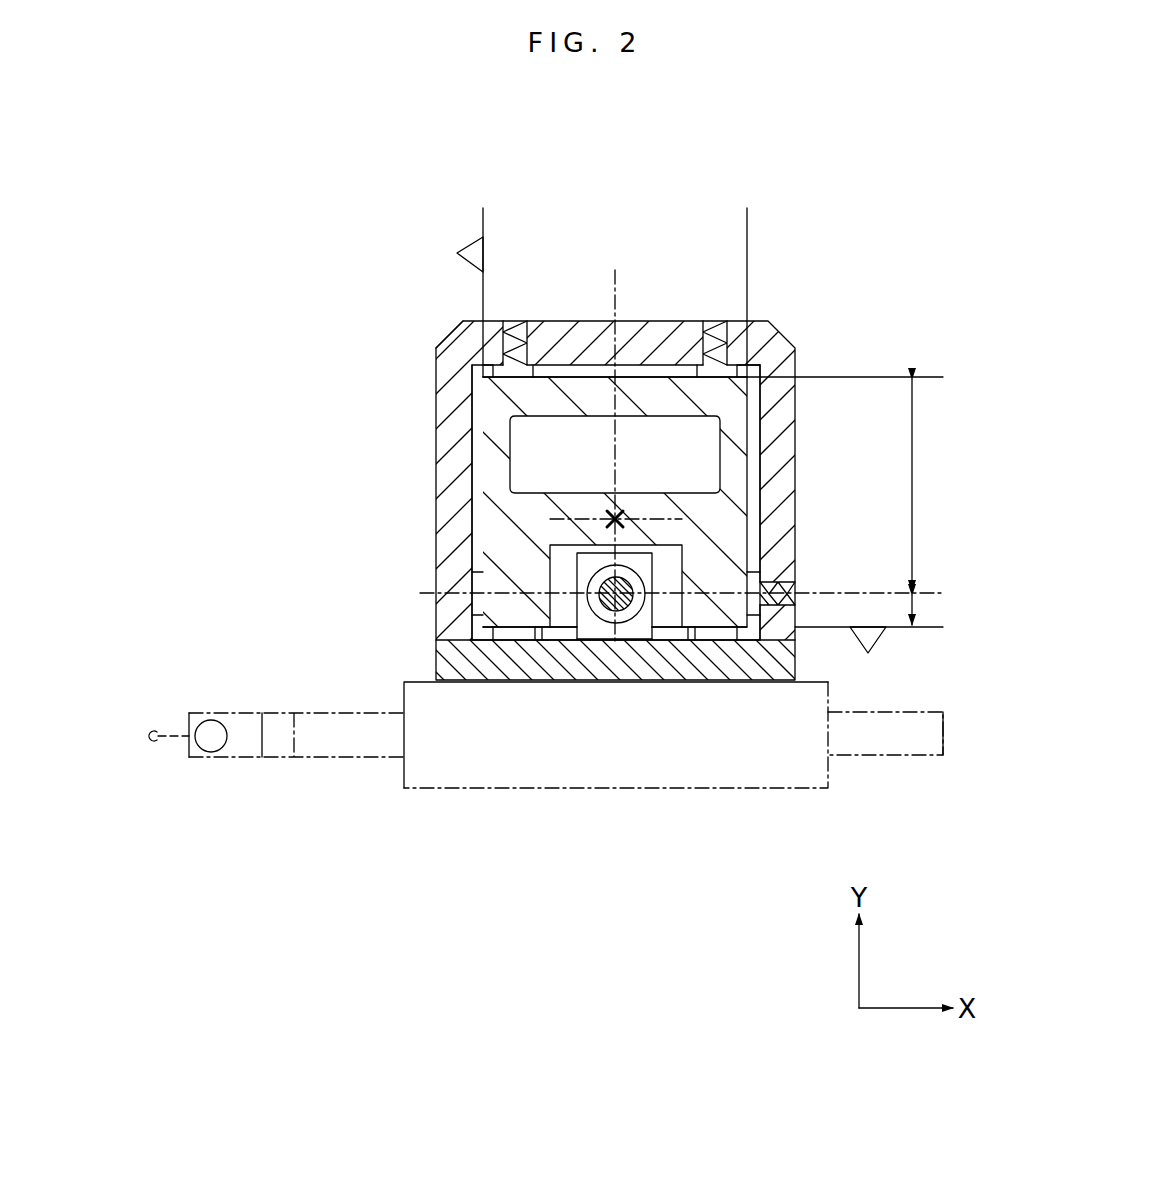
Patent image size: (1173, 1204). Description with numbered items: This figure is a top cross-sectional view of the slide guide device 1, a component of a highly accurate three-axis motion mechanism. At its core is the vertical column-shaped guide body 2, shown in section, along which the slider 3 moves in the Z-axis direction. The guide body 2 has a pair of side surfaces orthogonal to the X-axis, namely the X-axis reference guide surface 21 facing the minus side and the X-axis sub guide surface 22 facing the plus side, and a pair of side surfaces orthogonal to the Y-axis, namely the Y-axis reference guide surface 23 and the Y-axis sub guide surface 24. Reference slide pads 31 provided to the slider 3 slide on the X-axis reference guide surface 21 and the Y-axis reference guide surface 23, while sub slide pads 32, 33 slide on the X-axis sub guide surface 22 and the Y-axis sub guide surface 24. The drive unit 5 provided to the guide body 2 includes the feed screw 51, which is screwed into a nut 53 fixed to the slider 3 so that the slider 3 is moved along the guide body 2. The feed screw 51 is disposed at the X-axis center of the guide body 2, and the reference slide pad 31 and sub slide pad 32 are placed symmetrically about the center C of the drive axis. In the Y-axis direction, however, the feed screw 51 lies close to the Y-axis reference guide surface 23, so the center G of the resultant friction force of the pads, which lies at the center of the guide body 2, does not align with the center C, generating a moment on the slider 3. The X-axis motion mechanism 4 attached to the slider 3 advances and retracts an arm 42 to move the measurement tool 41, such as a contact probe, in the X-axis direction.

The slide guide device 1 is at (857, 188).
The guide body 2 is at (757, 406).
The slider 3 is at (802, 405).
The X-axis motion mechanism 4 is at (546, 785).
The drive unit 5 is at (616, 710).
The X-axis reference guide surface 21 is at (482, 450).
The X-axis sub guide surface 22 is at (750, 467).
The Y-axis reference guide surface 23 is at (537, 630).
The Y-axis sub guide surface 24 is at (594, 377).
The reference slide pad 31 is at (475, 581).
The sub slide pad 32 is at (755, 576).
The sub slide pad 33 is at (527, 372).
The measurement tool 41 is at (208, 757).
The arm 42 is at (333, 757).
The feed screw 51 is at (627, 603).
The nut 53 is at (645, 630).
The center of the drive axis C is at (595, 603).
The center of resultant force of friction resistances G is at (625, 518).